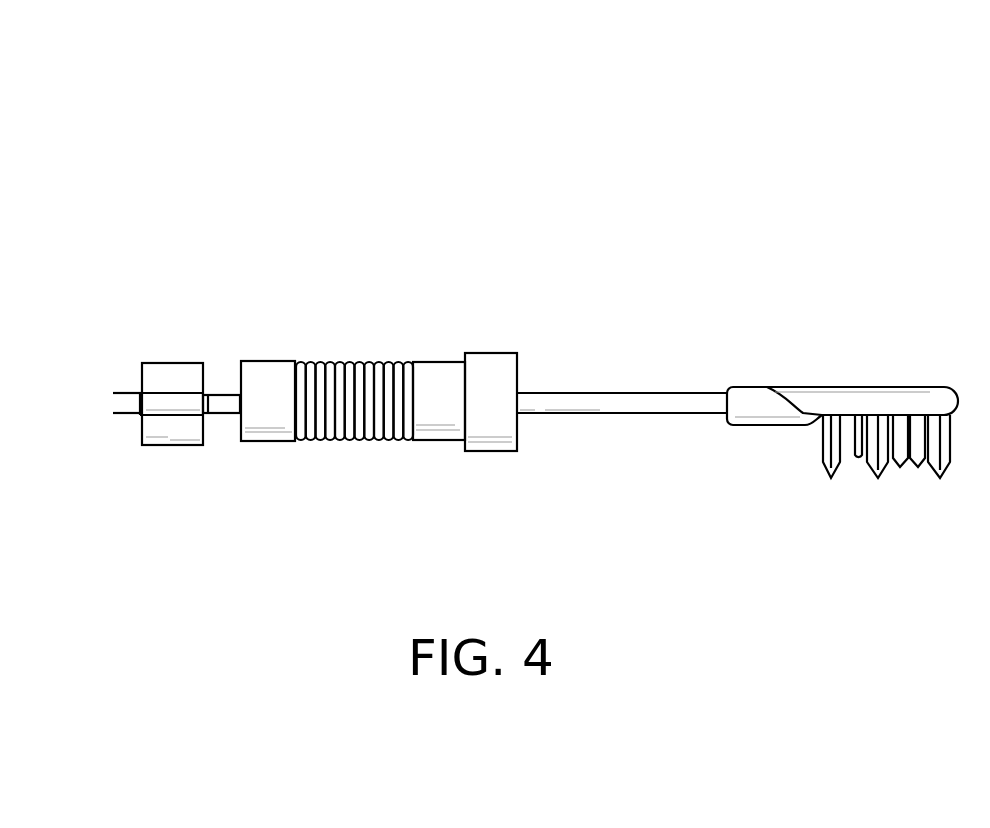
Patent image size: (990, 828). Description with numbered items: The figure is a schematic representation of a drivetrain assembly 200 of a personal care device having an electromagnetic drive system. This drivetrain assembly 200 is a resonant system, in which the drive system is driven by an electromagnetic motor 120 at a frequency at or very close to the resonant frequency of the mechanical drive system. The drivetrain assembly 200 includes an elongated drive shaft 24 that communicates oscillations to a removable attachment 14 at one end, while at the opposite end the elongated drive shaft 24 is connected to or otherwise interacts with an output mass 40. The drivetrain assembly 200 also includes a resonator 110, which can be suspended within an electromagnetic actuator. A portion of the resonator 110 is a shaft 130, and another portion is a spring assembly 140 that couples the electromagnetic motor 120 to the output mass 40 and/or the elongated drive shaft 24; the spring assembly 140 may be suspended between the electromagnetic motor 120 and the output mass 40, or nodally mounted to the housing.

The drivetrain assembly 200 is at (492, 148).
The resonator 110 is at (535, 270).
The electromagnetic motor 120 is at (163, 362).
The shaft 130 is at (228, 414).
The spring assembly 140 is at (346, 362).
The output mass 40 is at (490, 353).
The elongated drive shaft 24 is at (569, 414).
The removable attachment 14 is at (856, 388).